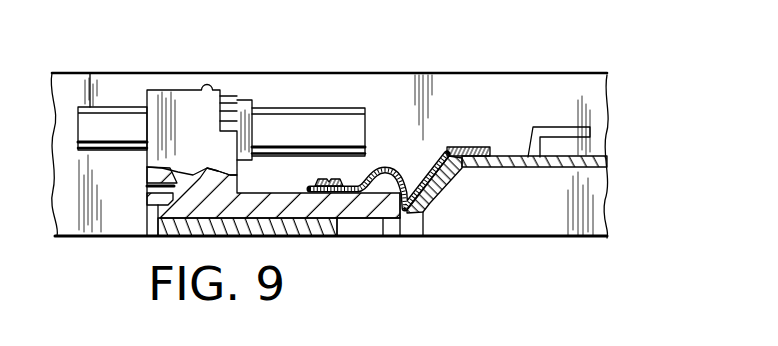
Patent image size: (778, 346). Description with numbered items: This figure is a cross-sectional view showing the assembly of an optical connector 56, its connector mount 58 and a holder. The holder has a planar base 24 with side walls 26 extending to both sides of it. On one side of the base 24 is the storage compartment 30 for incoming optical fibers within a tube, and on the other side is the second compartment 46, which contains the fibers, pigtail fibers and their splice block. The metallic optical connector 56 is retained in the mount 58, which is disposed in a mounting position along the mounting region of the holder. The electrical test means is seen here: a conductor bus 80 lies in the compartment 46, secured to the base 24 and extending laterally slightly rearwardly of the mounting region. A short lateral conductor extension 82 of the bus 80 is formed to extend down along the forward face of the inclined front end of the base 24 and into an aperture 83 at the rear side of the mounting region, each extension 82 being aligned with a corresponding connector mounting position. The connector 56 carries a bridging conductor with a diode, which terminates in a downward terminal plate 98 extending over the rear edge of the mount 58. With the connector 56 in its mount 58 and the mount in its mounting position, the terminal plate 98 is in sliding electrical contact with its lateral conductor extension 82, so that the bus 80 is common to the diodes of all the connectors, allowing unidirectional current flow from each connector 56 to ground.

The base 24 is at (592, 148).
The side walls 26 is at (337, 88).
The storage compartment 30 is at (546, 210).
The second compartment 46 is at (503, 133).
The optical connector 56 is at (305, 120).
The mount 58 is at (187, 111).
The conductor bus 80 is at (472, 142).
The lateral conductor extension 82 is at (417, 177).
The aperture 83 is at (360, 237).
The terminal plate 98 is at (388, 168).